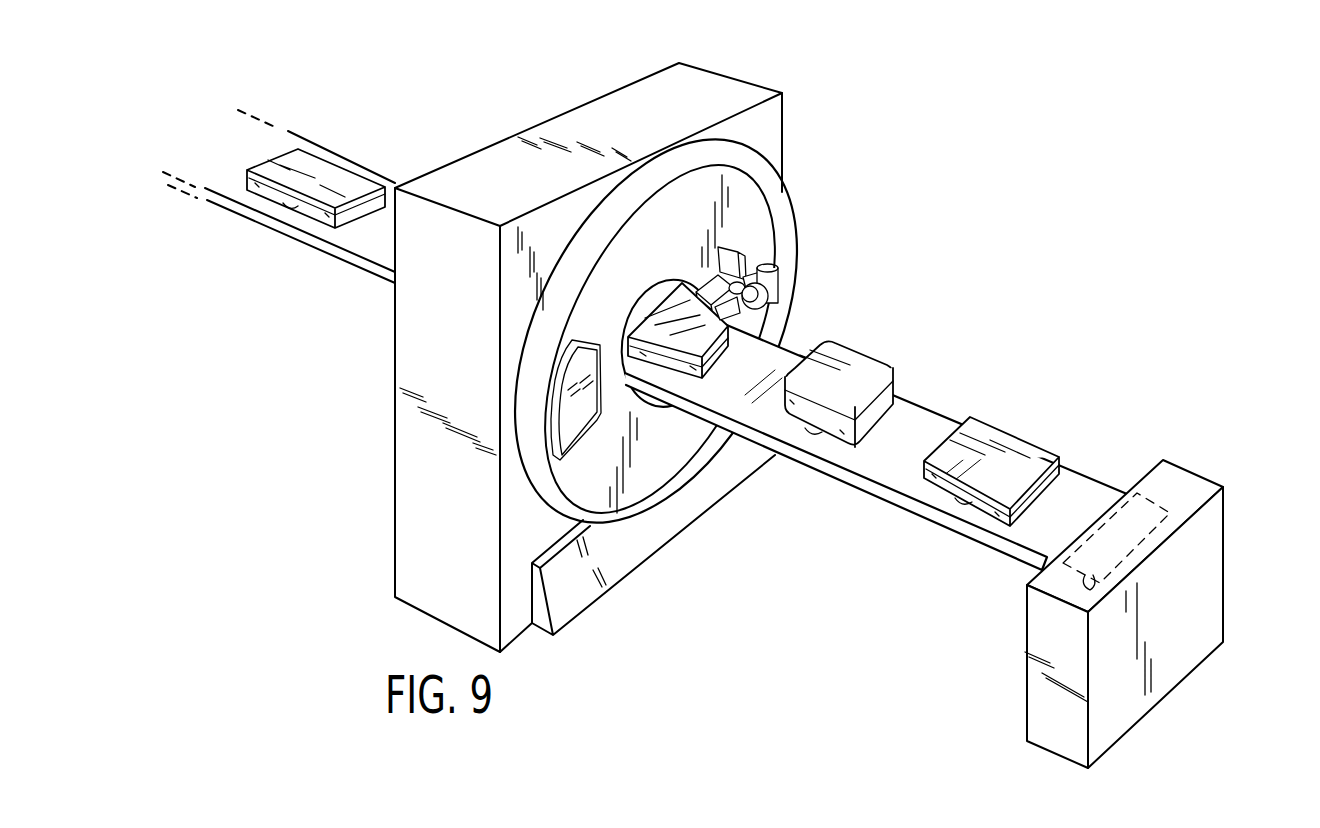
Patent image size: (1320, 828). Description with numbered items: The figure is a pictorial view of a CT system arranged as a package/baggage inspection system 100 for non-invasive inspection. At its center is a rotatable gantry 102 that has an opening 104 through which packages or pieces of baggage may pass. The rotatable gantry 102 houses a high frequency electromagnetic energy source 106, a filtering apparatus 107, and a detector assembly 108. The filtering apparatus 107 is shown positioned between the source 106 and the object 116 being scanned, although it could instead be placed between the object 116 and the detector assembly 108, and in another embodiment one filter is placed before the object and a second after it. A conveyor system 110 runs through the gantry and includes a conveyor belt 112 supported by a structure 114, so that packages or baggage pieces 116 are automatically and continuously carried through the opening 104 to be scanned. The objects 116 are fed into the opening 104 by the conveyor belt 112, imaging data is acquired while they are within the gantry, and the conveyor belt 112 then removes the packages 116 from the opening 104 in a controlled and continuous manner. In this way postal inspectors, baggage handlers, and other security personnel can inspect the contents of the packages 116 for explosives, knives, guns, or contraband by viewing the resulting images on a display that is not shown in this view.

The package/baggage inspection system 100 is at (692, 415).
The rotatable gantry 102 is at (776, 222).
The opening 104 is at (686, 288).
The high frequency electromagnetic energy source 106 is at (773, 290).
The filtering apparatus 107 is at (750, 245).
The detector assembly 108 is at (580, 428).
The conveyor system 110 is at (692, 439).
The conveyor belt 112 is at (350, 243).
The structure 114 is at (1212, 581).
The packages or baggage pieces 116 is at (330, 173).